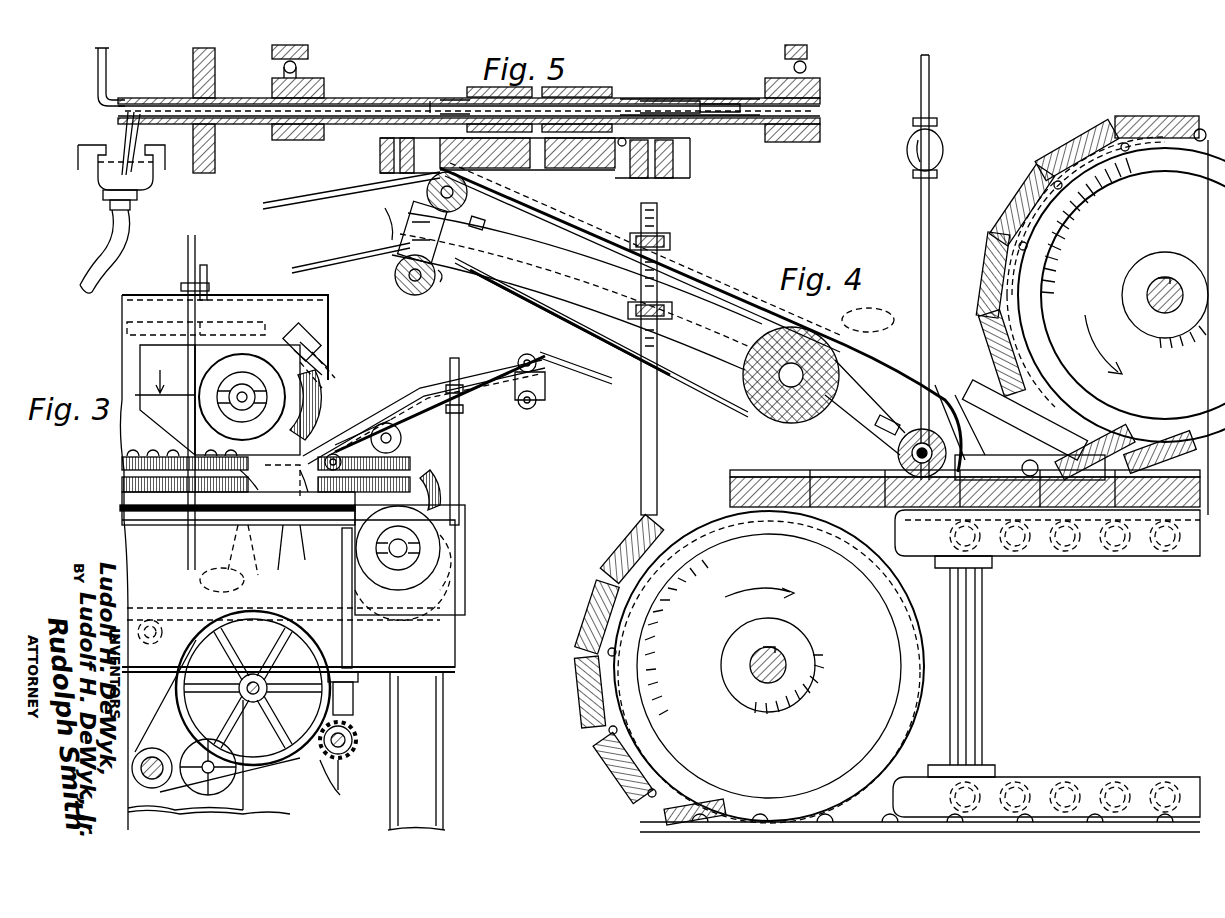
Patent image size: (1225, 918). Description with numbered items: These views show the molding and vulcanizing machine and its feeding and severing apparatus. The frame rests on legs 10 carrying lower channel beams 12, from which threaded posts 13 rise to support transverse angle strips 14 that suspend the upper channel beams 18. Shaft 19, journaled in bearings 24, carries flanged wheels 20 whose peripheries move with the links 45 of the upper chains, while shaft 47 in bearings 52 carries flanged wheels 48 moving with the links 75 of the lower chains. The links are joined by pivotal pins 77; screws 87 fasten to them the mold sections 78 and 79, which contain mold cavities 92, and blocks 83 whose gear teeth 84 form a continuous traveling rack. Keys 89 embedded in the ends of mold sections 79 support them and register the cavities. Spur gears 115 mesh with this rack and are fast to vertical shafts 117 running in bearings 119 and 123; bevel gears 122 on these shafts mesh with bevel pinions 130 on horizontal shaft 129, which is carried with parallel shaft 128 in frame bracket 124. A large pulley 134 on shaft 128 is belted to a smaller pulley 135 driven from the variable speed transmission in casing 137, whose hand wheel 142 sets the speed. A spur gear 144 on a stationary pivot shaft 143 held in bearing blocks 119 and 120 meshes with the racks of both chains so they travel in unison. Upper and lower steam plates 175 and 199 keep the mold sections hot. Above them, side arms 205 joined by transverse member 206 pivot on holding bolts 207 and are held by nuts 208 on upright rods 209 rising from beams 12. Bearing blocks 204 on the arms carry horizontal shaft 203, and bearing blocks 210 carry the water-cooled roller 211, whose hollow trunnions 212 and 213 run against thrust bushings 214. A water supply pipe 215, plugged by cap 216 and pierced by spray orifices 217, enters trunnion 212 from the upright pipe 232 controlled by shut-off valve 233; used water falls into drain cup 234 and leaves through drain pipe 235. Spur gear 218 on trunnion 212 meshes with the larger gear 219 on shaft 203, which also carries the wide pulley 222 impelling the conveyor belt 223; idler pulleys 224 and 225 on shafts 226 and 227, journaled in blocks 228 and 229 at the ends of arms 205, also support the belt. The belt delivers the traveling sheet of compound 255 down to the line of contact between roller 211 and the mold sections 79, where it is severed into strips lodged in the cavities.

In FIG. 3, the leg 10 is at (436, 802).
In FIG. 3, the lower channel beam 12 is at (455, 648).
In FIG. 3, the threaded post 13 is at (197, 248).
In FIG. 3, the transverse angle strip 14 is at (207, 276).
In FIG. 3, the upper channel beam 18 is at (122, 316).
In FIG. 4, the shaft 19 is at (1147, 295).
In FIG. 3, the shaft 19 is at (242, 388).
In FIG. 4, the flanged wheel 20 is at (1118, 327).
In FIG. 3, the flanged wheel 20 is at (318, 378).
In FIG. 3, the bearing 24 is at (290, 345).
In FIG. 4, the link 45 is at (1095, 430).
In FIG. 4, the shaft 47 is at (760, 683).
In FIG. 3, the shaft 47 is at (398, 558).
In FIG. 4, the flanged wheel 48 is at (895, 600).
In FIG. 3, the flanged wheel 48 is at (410, 557).
In FIG. 3, the bearing 52 is at (420, 545).
In FIG. 5, the link 75 is at (630, 176).
In FIG. 4, the link 75 is at (830, 520).
In FIG. 4, the pivotal pin 77 is at (1122, 125).
In FIG. 4, the mold section 78 is at (1160, 435).
In FIG. 5, the mold section 79 is at (500, 168).
In FIG. 4, the mold section 79 is at (1140, 540).
In FIG. 5, the block 83 is at (380, 148).
In FIG. 3, the block 83 is at (318, 378).
In FIG. 5, the gear teeth 84 is at (400, 166).
In FIG. 5, the screw 87 is at (650, 176).
In FIG. 4, the key 89 is at (628, 545).
In FIG. 5, the mold cavity 92 is at (570, 168).
In FIG. 4, the mold cavity 92 is at (985, 268).
In FIG. 3, the spur gear 115 is at (340, 498).
In FIG. 3, the vertical shaft 117 is at (342, 590).
In FIG. 3, the bearing 119 is at (298, 547).
In FIG. 3, the bearing block 120 is at (281, 552).
In FIG. 3, the bevel gear 122 is at (353, 708).
In FIG. 3, the bearing 123 is at (358, 686).
In FIG. 3, the frame bracket 124 is at (342, 790).
In FIG. 3, the shaft 128 is at (255, 740).
In FIG. 3, the horizontal shaft 129 is at (358, 738).
In FIG. 3, the bevel pinion 130 is at (340, 762).
In FIG. 3, the large pulley 134 is at (318, 770).
In FIG. 3, the smaller pulley 135 is at (158, 790).
In FIG. 3, the casing 137 is at (262, 814).
In FIG. 3, the hand wheel 142 is at (214, 795).
In FIG. 3, the pivot shaft 143 is at (222, 580).
In FIG. 3, the spur gear 144 is at (246, 550).
In FIG. 4, the upper steam plate 175 is at (1050, 555).
In FIG. 4, the lower steam plate 199 is at (1035, 780).
In FIG. 4, the horizontal shaft 203 is at (745, 350).
In FIG. 4, the bearing block 204 is at (868, 320).
In FIG. 3, the bearing block 204 is at (395, 428).
In FIG. 5, the side arm 205 is at (272, 58).
In FIG. 4, the side arm 205 is at (648, 328).
In FIG. 3, the side arm 205 is at (420, 388).
In FIG. 4, the transverse member 206 is at (392, 234).
In FIG. 4, the holding bolt 207 is at (985, 455).
In FIG. 4, the nut 208 is at (670, 242).
In FIG. 3, the nut 208 is at (183, 287).
In FIG. 4, the upright rod 209 is at (657, 466).
In FIG. 3, the upright rod 209 is at (459, 448).
In FIG. 4, the bearing block 210 is at (898, 415).
In FIG. 3, the bearing block 210 is at (333, 452).
In FIG. 5, the water-cooled roller 211 is at (470, 88).
In FIG. 4, the water-cooled roller 211 is at (940, 380).
In FIG. 5, the hollow trunnion 212 is at (420, 98).
In FIG. 4, the hollow trunnion 212 is at (955, 392).
In FIG. 5, the hollow trunnion 213 is at (690, 98).
In FIG. 5, the bushing 214 is at (315, 78).
In FIG. 5, the water supply pipe 215 is at (430, 98).
In FIG. 4, the water supply pipe 215 is at (898, 452).
In FIG. 5, the cap 216 is at (712, 106).
In FIG. 5, the spray orifice 217 is at (668, 92).
In FIG. 5, the spur gear 218 is at (215, 140).
In FIG. 4, the spur gear 219 is at (1010, 420).
In FIG. 4, the wide pulley 222 is at (760, 415).
In FIG. 3, the wide pulley 222 is at (380, 448).
In FIG. 4, the conveyor belt 223 is at (305, 265).
In FIG. 3, the conveyor belt 223 is at (590, 378).
In FIG. 4, the idler pulley 224 is at (395, 202).
In FIG. 4, the idler pulley 225 is at (405, 293).
In FIG. 4, the shaft 226 is at (470, 215).
In FIG. 4, the shaft 227 is at (445, 285).
In FIG. 4, the block 228 is at (400, 210).
In FIG. 3, the block 228 is at (548, 349).
In FIG. 3, the block 229 is at (535, 405).
In FIG. 5, the water supply pipe 232 is at (110, 56).
In FIG. 4, the water supply pipe 232 is at (921, 178).
In FIG. 4, the shut-off valve 233 is at (943, 140).
In FIG. 5, the drain cup 234 is at (153, 175).
In FIG. 5, the drain pipe 235 is at (110, 232).
In FIG. 4, the sheet of compound 255 is at (315, 195).
In FIG. 3, the sheet of compound 255 is at (485, 372).